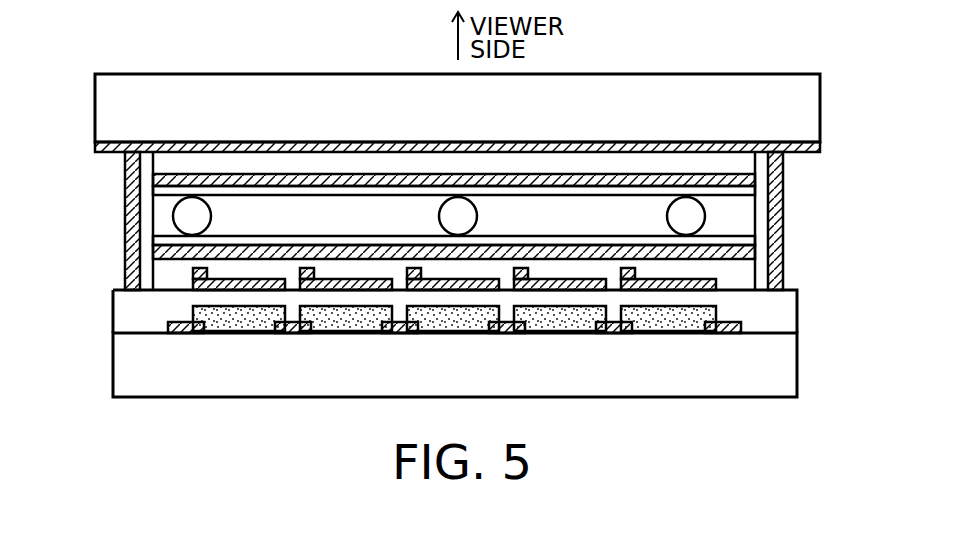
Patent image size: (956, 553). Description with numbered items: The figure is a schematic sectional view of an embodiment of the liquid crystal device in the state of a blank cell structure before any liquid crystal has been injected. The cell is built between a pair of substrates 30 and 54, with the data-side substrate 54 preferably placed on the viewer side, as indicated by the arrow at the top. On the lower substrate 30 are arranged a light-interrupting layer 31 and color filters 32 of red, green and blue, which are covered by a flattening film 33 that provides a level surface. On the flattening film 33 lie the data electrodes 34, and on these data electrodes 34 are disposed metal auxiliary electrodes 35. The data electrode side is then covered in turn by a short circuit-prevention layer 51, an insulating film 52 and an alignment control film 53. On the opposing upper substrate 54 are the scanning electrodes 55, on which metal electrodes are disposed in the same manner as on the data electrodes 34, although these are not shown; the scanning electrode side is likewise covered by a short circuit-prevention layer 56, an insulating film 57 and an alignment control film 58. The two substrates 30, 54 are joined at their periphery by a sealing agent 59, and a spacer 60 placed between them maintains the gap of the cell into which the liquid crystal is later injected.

The substrate 30 is at (250, 382).
The light-interrupting layer 31 is at (298, 334).
The color filters 32 is at (355, 325).
The flattening film 33 is at (783, 310).
The data electrodes 34 is at (717, 286).
The metal electrodes 35 is at (627, 272).
The short circuit-prevention layer 51 is at (156, 275).
The insulating film 52 is at (153, 255).
The alignment control film 53 is at (151, 243).
The substrate 54 is at (287, 92).
The scanning electrodes 55 is at (617, 147).
The short circuit-prevention layer 56 is at (707, 163).
The insulating film 57 is at (752, 178).
The alignment control film 58 is at (752, 191).
The sealing agent 59 is at (783, 229).
The spacer 60 is at (211, 216).